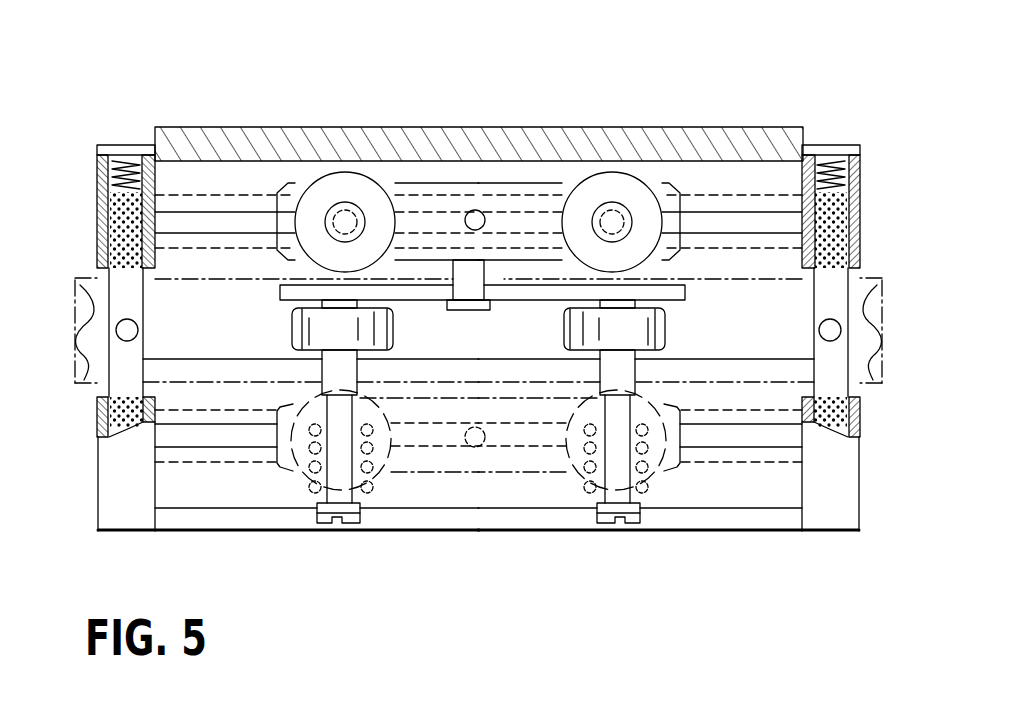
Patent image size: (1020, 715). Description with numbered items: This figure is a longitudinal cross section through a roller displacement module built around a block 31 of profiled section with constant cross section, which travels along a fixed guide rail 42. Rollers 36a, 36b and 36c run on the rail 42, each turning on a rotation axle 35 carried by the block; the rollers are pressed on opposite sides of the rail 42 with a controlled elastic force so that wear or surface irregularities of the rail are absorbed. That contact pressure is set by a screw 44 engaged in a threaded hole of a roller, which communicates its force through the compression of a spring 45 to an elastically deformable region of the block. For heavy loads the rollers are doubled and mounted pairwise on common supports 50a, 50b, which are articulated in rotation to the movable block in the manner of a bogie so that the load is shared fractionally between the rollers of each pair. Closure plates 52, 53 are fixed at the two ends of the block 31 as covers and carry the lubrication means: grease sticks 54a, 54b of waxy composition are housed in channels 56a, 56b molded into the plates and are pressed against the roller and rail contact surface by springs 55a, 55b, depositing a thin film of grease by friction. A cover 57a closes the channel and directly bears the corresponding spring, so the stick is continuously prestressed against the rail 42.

The block 31 is at (280, 104).
The rotation axle 35 is at (607, 232).
The roller 36a is at (295, 330).
The roller 36b is at (346, 172).
The roller 36c is at (408, 472).
The guide rail 42 is at (84, 388).
The screw 44 is at (333, 517).
The spring 45 is at (318, 487).
The common support 50a is at (425, 287).
The common support 50b is at (517, 190).
The closure plate 52 is at (92, 176).
The closure plate 53 is at (872, 172).
The grease stick 54a is at (133, 321).
The grease stick 54b is at (824, 321).
The spring 55a is at (148, 178).
The spring 55b is at (812, 175).
The channel 56a is at (76, 268).
The channel 56b is at (877, 270).
The cover 57a is at (128, 150).